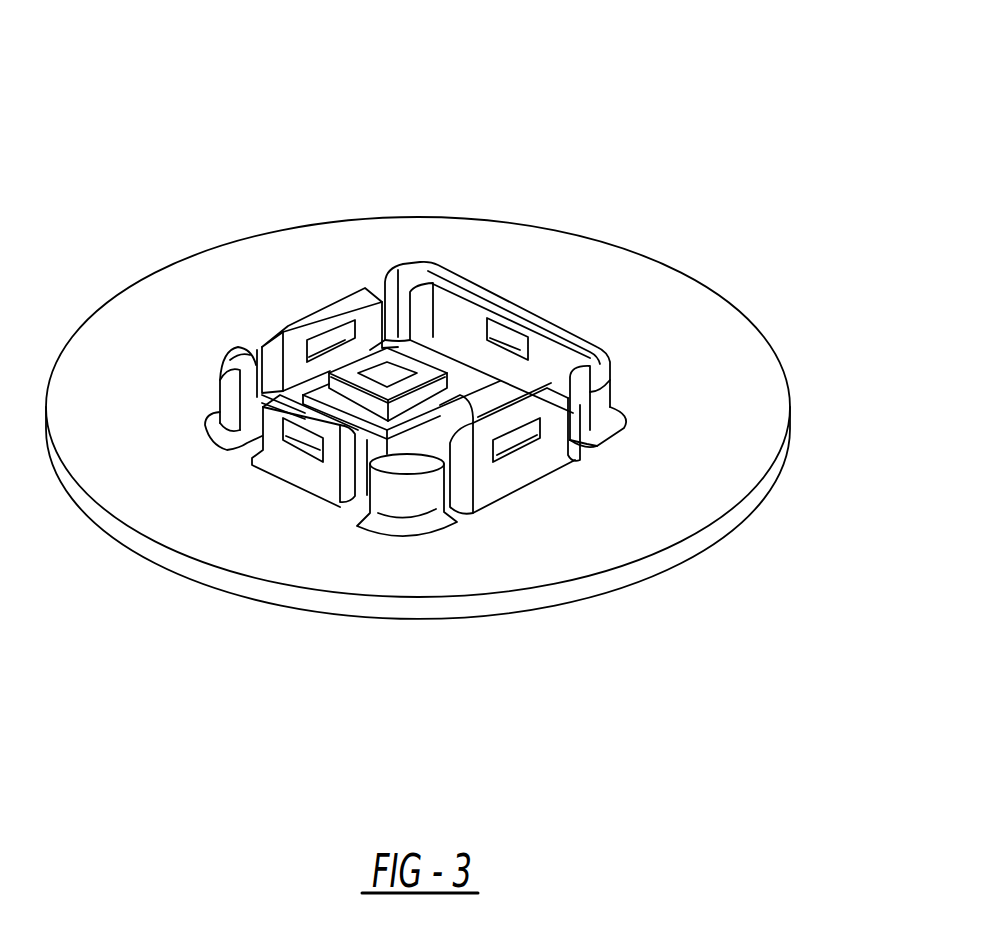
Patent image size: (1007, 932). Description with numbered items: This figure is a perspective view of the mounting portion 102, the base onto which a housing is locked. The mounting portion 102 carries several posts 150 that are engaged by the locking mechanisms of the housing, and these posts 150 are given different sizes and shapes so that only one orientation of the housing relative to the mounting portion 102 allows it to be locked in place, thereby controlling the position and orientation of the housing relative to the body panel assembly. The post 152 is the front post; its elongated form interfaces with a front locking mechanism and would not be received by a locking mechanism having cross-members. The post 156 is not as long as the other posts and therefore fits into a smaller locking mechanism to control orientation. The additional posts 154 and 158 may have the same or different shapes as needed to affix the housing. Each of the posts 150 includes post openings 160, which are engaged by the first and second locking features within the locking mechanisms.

The mounting portion 102 is at (615, 560).
The posts 150 is at (348, 283).
The post 152 is at (557, 343).
The post 154 is at (518, 478).
The post 156 is at (308, 443).
The post 158 is at (326, 322).
The post openings 160 is at (323, 347).